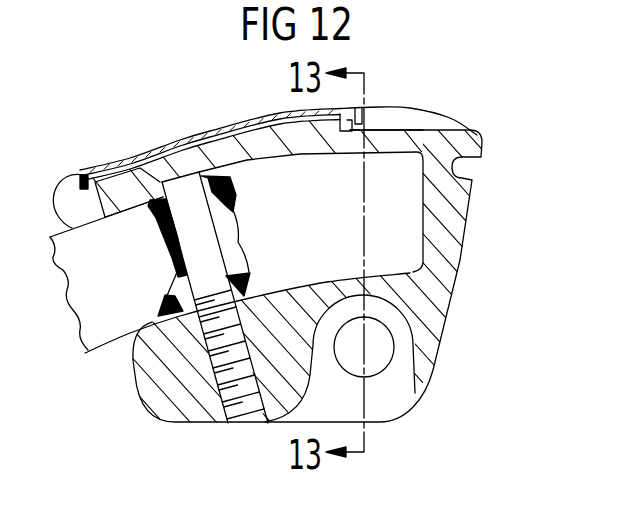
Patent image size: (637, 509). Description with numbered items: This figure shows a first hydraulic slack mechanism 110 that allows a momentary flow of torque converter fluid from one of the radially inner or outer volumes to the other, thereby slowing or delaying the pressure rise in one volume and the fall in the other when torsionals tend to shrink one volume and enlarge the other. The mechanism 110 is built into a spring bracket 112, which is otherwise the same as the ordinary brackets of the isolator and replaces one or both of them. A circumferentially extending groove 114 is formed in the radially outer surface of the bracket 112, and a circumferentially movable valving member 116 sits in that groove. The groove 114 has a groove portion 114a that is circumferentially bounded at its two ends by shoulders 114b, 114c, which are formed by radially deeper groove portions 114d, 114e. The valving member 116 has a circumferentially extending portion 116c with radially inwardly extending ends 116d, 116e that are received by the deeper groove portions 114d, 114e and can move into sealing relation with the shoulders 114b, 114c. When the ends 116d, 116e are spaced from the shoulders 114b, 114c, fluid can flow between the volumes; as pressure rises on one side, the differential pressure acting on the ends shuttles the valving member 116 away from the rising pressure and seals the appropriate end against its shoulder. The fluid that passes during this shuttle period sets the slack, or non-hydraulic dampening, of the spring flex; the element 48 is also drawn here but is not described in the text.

The clamping assembly 110 is at (125, 96).
The clamp body 112 is at (466, 263).
The arched clamp plate 114 is at (410, 120).
The right wedge surface of clamp plate 114a is at (242, 160).
The left wedge surface of clamp plate 114b is at (98, 196).
The recess of clamp plate 114c is at (350, 134).
The nose end of clamp plate 114d is at (75, 205).
The flange end of clamp plate 114e is at (447, 120).
The cover strip 116 is at (259, 112).
The top surface of cover strip 116c is at (207, 131).
The left hook of cover strip 116d is at (80, 182).
The right hook of cover strip 116e is at (362, 116).
The mounting surface 48 is at (108, 355).